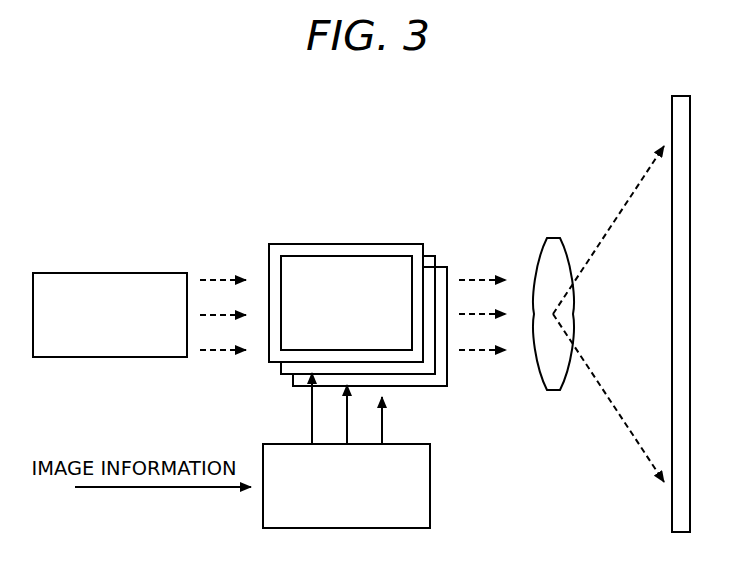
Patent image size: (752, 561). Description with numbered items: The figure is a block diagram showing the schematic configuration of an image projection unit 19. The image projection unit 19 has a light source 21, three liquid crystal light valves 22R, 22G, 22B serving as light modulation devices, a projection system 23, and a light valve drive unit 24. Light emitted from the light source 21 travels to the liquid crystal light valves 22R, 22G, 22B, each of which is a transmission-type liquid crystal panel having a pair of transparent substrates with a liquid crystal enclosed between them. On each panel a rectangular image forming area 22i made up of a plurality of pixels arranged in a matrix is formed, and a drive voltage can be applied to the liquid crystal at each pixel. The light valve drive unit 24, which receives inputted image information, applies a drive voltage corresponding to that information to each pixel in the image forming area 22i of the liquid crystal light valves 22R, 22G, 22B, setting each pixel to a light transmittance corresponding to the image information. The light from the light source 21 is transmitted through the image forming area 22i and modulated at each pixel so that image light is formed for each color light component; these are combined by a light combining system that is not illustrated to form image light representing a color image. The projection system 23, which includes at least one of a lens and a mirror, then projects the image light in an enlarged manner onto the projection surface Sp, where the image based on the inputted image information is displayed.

The image projection unit 19 is at (106, 147).
The light source 21 is at (133, 273).
The liquid crystal light valve 22R is at (362, 244).
The liquid crystal light valve 22G is at (435, 256).
The liquid crystal light valve 22B is at (447, 267).
The image forming area 22i is at (292, 338).
The projection system 23 is at (557, 238).
The light valve drive unit 24 is at (412, 444).
The projection surface Sp is at (672, 118).